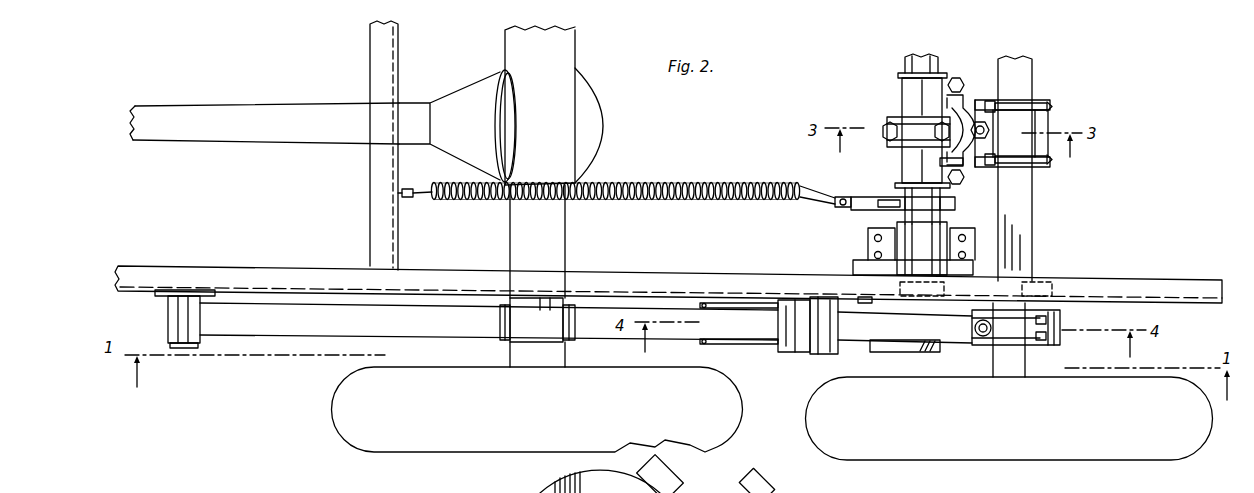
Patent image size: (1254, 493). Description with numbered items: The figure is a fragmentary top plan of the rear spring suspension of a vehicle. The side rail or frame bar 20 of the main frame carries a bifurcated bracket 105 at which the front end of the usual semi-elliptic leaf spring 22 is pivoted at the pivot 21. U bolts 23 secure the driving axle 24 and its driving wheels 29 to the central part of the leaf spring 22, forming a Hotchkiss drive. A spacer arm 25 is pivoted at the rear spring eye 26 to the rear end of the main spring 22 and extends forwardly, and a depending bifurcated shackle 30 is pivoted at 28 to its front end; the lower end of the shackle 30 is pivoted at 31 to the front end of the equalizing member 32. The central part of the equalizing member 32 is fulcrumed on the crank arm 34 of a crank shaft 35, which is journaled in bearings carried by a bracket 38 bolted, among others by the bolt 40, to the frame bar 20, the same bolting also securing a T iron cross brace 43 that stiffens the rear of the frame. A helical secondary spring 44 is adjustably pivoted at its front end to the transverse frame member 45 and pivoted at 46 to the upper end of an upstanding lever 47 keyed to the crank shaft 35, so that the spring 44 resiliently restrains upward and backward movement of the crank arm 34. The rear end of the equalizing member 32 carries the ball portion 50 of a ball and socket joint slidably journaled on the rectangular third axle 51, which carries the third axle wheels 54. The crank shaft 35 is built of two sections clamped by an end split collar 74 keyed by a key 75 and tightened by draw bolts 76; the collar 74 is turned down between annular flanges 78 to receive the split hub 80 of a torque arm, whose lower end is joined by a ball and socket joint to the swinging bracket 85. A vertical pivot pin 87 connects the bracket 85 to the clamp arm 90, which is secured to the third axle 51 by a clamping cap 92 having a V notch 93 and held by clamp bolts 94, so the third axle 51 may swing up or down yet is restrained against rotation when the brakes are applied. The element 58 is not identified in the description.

The side rail or frame bar 20 is at (280, 270).
The pivot 21 is at (185, 349).
The semi-elliptic leaf spring 22 is at (447, 322).
The U bolts 23 is at (537, 320).
The driving axle 24 is at (565, 48).
The spacer arm 25 is at (820, 292).
The pivot 26 is at (826, 356).
The pivot 28 is at (795, 353).
The driving wheels 29 is at (368, 440).
The link or shackle 30 is at (760, 345).
The pivot 31 is at (738, 344).
The equalizing member 32 is at (850, 342).
The crank arm 34 is at (905, 353).
The crank shaft 35 is at (919, 55).
The bracket 38 is at (860, 262).
The bolt 40 is at (860, 297).
The T iron cross brace 43 is at (928, 232).
The helical secondary spring 44 is at (648, 183).
The transverse frame member 45 is at (372, 52).
The pivot 46 is at (850, 197).
The upstanding lever 47 is at (956, 204).
The ball portion 50 is at (1030, 348).
The third axle 51 is at (1015, 56).
The third axle wheels 54 is at (1060, 447).
The bolt 58 is at (984, 337).
The end split collar 74 is at (902, 80).
The key 75 is at (900, 74).
The draw bolts 76 is at (956, 78).
The annular flanges 78 is at (905, 122).
The split hub 80 is at (888, 120).
The swinging bracket 85 is at (963, 96).
The vertical pivot pin 87 is at (992, 128).
The clamp arm 90 is at (965, 165).
The clamping cap 92 is at (1040, 100).
The clamp bolts 94 is at (990, 103).
The bifurcated bracket 105 is at (172, 316).
The V notch 93 is at (712, 474).